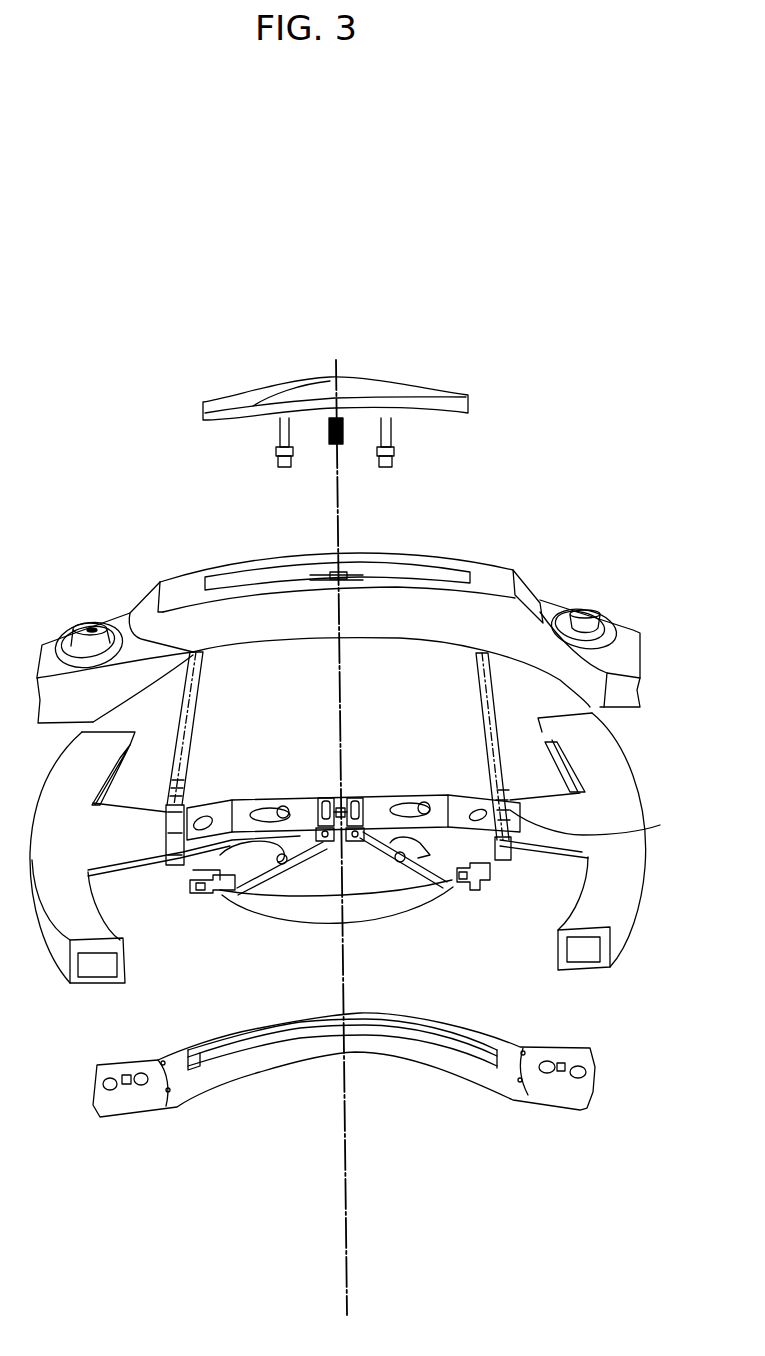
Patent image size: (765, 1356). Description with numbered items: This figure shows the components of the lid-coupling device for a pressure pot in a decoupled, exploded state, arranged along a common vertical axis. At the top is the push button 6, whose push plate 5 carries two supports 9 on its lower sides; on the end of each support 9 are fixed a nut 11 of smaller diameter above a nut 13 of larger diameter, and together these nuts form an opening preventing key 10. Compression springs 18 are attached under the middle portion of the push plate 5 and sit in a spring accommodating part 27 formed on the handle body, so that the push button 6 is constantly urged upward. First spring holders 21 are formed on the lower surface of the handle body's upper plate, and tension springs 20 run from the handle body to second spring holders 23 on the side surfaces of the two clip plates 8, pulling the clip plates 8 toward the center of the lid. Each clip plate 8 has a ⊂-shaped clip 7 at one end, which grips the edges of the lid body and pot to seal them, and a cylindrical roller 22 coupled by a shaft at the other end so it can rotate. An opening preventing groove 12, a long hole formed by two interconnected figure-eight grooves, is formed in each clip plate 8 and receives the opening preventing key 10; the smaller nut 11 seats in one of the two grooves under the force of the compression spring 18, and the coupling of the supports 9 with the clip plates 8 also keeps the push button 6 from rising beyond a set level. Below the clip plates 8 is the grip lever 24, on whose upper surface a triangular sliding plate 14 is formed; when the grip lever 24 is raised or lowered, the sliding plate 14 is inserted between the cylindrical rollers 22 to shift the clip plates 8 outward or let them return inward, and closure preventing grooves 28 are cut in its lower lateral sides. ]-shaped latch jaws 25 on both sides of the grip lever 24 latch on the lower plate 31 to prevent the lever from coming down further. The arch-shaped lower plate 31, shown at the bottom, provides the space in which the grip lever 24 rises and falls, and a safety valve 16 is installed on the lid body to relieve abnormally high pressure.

The push plate 5 is at (222, 402).
The push button 6 is at (350, 381).
The support 9 is at (280, 440).
The opening preventing key 10 is at (394, 443).
The nut having a smaller diameter 11 is at (300, 440).
The nut having a larger diameter 13 is at (278, 460).
The compression spring 18 is at (345, 413).
The first spring holder 21 is at (193, 652).
The spring accommodating part 27 is at (340, 562).
The tension spring 20 is at (545, 728).
The second spring holder 23 is at (167, 863).
The ⊂-shaped clip 7 is at (612, 950).
The clip plate 8 is at (590, 738).
The safety valve 16 is at (590, 840).
The opening preventing groove 12 is at (280, 795).
The cylindrical roller 22 is at (308, 797).
The triangular sliding plate 14 is at (447, 880).
The grip lever 24 is at (345, 905).
The closure preventing groove 28 is at (195, 891).
The latch jaw 25 is at (490, 883).
The lower plate 31 is at (248, 1023).